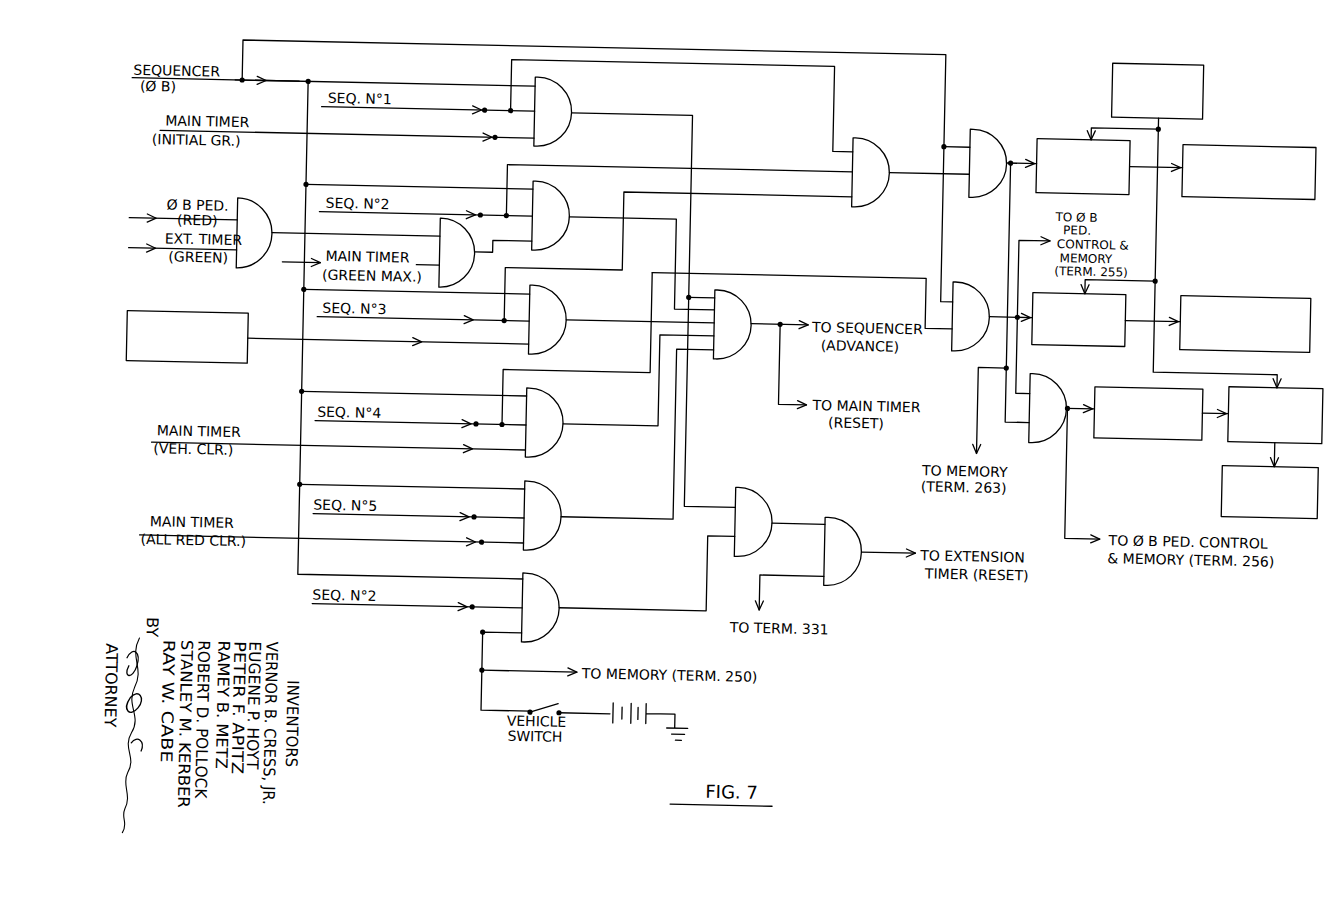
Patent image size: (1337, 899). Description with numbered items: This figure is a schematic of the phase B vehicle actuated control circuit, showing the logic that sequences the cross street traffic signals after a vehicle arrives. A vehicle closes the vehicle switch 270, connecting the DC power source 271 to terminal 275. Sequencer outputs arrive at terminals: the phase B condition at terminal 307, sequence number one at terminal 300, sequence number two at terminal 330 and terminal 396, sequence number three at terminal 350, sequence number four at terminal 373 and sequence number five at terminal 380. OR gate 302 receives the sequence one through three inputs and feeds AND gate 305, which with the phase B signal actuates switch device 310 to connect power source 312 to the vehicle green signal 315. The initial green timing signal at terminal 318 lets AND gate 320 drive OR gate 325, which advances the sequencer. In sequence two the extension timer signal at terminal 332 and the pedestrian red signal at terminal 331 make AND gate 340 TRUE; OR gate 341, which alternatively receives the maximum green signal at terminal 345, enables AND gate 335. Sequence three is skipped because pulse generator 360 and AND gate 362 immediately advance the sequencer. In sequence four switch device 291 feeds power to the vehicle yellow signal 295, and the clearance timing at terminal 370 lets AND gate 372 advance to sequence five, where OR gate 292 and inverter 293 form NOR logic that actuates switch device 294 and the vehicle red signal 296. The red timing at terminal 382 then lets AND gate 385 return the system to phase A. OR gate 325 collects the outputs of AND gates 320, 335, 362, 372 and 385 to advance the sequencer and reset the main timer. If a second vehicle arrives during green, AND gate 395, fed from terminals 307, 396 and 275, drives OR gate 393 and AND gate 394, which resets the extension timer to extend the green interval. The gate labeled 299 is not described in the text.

The terminal 307 is at (268, 78).
The terminal 300 is at (483, 103).
The terminal 318 is at (492, 135).
The AND gate 320 is at (553, 102).
The terminal 330 is at (481, 209).
The AND gate 335 is at (548, 207).
The terminal 331 is at (161, 215).
The terminal 332 is at (161, 252).
The AND gate 340 is at (257, 218).
The terminal 345 is at (310, 267).
The OR gate 341 is at (468, 253).
The OR gate 302 is at (863, 147).
The AND gate 305 is at (979, 138).
The switch device 310 is at (1077, 142).
The power source 312 is at (1165, 64).
The vehicle green signal 315 is at (1256, 146).
The AND gate 299 is at (971, 285).
The switch device 291 is at (1074, 282).
The vehicle yellow signal 295 is at (1280, 290).
The OR gate 292 is at (1045, 378).
The inverter 293 is at (1150, 428).
The switch device 294 is at (1290, 378).
The vehicle red signal 296 is at (1240, 462).
The OR gate 325 is at (740, 302).
The AND gate 362 is at (546, 308).
The terminal 350 is at (484, 312).
The pulse generator 360 is at (194, 356).
The AND gate 372 is at (549, 410).
The terminal 373 is at (481, 417).
The terminal 370 is at (476, 441).
The AND gate 385 is at (543, 498).
The terminal 380 is at (482, 508).
The terminal 382 is at (493, 538).
The OR gate 393 is at (751, 493).
The AND gate 394 is at (841, 520).
The AND gate 395 is at (545, 587).
The terminal 396 is at (487, 598).
The terminal 275 is at (493, 627).
The vehicle switch 270 is at (559, 697).
The DC power source 271 is at (641, 721).